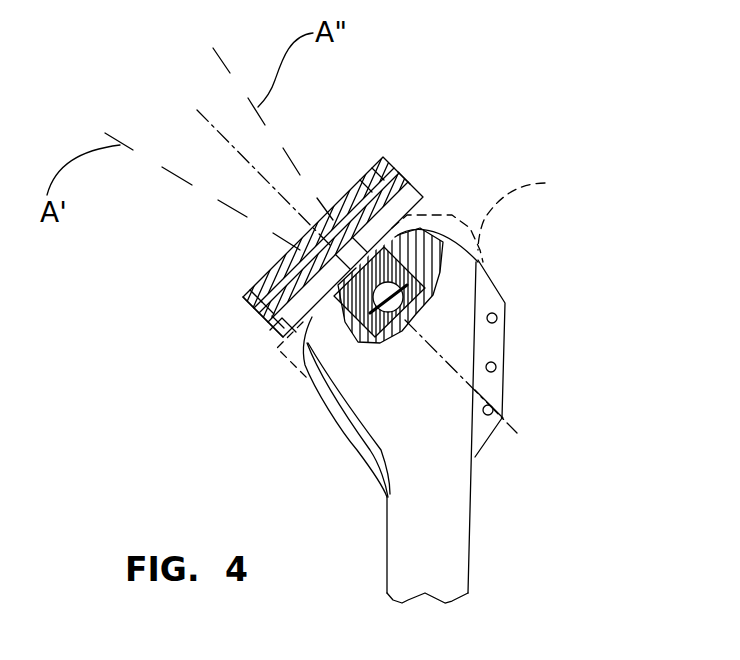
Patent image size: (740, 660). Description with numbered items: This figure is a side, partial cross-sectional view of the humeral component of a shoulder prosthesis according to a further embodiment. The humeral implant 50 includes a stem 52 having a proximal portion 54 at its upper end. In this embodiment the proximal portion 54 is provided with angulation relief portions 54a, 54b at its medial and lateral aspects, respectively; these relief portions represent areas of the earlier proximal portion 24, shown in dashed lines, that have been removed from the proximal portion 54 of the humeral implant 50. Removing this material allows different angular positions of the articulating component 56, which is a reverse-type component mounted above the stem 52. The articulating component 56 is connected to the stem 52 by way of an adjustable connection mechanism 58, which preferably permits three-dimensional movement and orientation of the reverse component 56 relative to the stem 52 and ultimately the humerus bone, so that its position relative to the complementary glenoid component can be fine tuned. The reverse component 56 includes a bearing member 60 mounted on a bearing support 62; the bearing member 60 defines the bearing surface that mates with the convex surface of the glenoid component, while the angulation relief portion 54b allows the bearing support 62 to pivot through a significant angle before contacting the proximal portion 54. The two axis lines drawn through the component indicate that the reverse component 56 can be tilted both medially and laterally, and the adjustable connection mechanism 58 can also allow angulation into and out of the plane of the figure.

The proximal portion 24 is at (527, 208).
The humeral implant 50 is at (352, 448).
The stem 52 is at (447, 522).
The proximal portion 54 is at (468, 256).
The angulation relief portion 54a is at (303, 355).
The angulation relief portion 54b is at (435, 235).
The articulating component 56 is at (408, 165).
The adjustable connection mechanism 58 is at (356, 362).
The bearing member 60 is at (268, 282).
The bearing support 62 is at (282, 337).